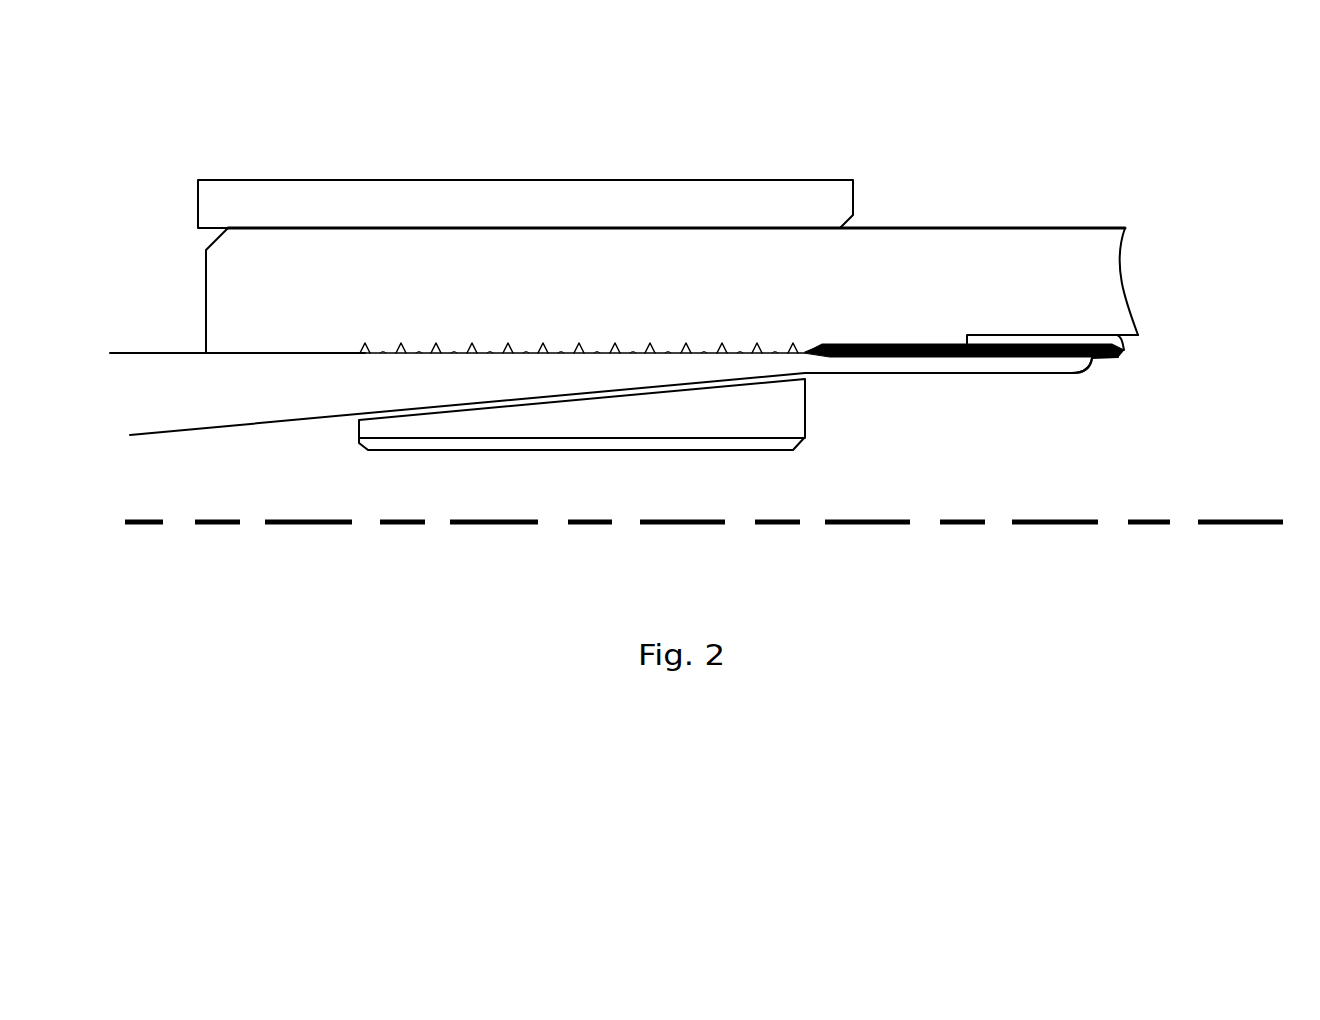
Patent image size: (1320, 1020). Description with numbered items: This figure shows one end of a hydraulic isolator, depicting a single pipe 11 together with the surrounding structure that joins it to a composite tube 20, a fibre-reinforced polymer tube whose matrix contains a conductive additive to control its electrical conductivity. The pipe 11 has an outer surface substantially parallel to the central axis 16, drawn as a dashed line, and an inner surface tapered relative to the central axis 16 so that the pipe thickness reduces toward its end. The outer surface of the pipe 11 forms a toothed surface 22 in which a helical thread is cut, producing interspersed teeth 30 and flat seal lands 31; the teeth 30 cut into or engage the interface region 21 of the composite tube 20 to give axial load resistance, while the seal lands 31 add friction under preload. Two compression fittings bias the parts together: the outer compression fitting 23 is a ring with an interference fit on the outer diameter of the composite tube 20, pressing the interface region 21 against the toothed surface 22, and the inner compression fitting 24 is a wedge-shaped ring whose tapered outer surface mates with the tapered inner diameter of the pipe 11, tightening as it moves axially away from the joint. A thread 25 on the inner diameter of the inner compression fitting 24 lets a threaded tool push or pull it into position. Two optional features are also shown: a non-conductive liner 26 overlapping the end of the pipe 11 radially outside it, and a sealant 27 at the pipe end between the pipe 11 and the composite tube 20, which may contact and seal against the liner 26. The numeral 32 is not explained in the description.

The pipe 11 is at (175, 372).
The central axis 16 is at (1063, 527).
The composite tube 20 is at (237, 267).
The interface region 21 is at (426, 340).
The toothed surface 22 is at (455, 358).
The outer compression fitting 23 is at (577, 205).
The inner compression fitting 24 is at (755, 410).
The thread 25 is at (680, 443).
The non-conductive liner 26 is at (1022, 342).
The sealant 27 is at (1090, 360).
The teeth 30 is at (685, 345).
The seal lands 31 is at (738, 345).
The strip edge 32 is at (767, 343).